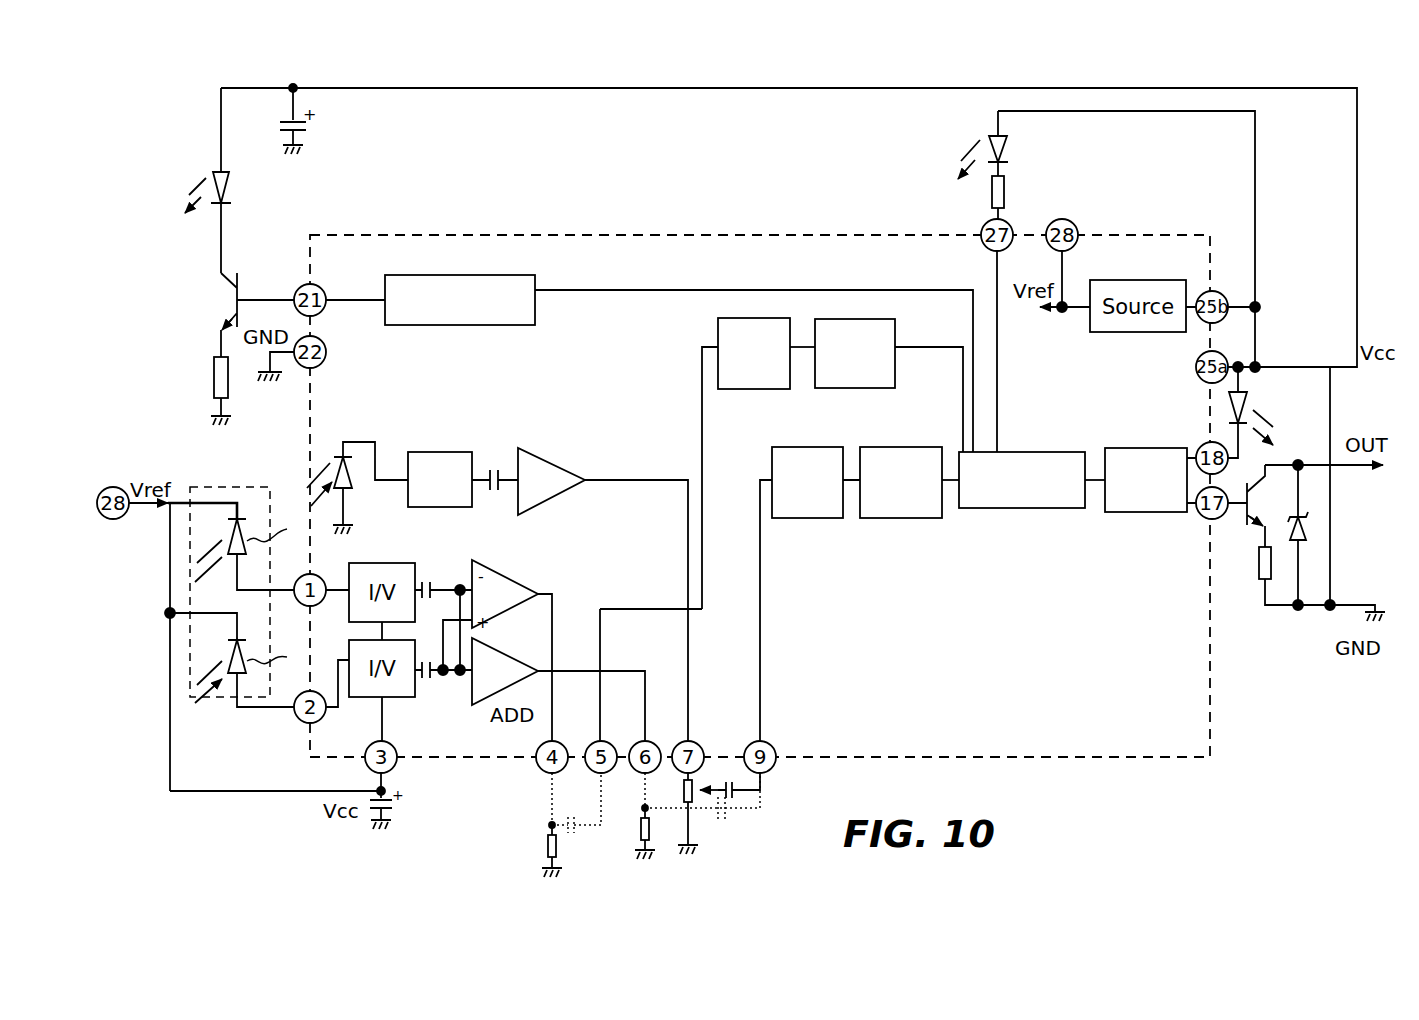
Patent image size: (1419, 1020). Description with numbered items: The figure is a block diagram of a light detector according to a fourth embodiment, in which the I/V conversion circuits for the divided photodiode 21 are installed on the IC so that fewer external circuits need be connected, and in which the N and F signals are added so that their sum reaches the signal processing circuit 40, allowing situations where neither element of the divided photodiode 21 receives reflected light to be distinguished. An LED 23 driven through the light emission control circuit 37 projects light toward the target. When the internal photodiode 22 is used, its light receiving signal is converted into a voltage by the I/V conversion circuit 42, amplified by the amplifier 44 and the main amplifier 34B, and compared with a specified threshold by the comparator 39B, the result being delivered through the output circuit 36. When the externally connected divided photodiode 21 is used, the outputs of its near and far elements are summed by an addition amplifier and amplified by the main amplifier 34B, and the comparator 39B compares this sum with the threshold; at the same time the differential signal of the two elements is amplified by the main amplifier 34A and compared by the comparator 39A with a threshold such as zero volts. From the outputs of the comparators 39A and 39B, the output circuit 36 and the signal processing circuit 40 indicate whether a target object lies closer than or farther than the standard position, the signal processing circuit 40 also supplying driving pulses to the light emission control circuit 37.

The divided photodiode 21 is at (262, 486).
The internal photodiode 22 is at (352, 480).
The LED 23 is at (221, 167).
The output circuit 36 is at (1155, 447).
The light emission control circuit 37 is at (505, 326).
The signal processing circuit 40 is at (1050, 509).
The I/V conversion circuit 42 is at (432, 452).
The amplifier 44 is at (556, 496).
The main amplifier 34A is at (748, 390).
The main amplifier 34B is at (812, 519).
The comparator 39A is at (845, 390).
The comparator 39B is at (900, 519).